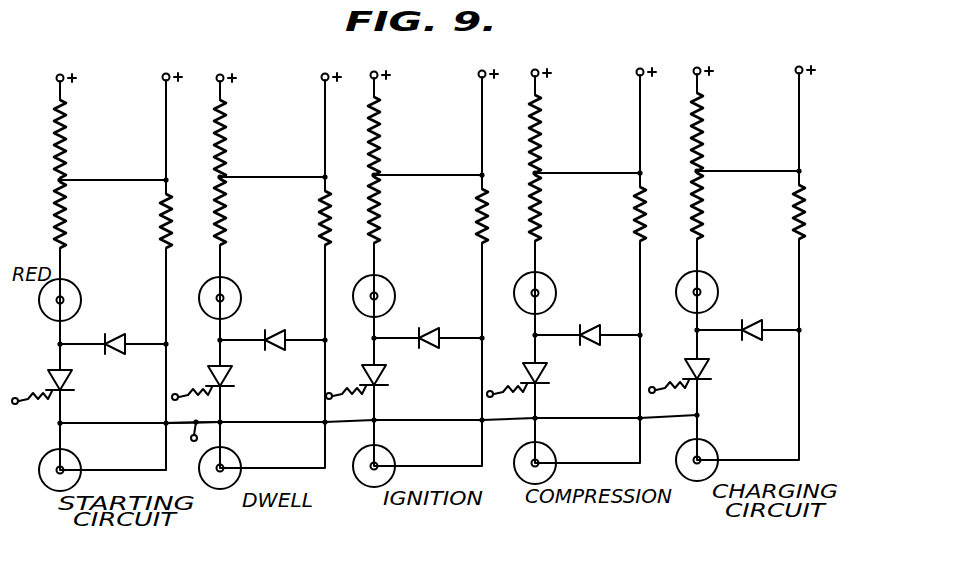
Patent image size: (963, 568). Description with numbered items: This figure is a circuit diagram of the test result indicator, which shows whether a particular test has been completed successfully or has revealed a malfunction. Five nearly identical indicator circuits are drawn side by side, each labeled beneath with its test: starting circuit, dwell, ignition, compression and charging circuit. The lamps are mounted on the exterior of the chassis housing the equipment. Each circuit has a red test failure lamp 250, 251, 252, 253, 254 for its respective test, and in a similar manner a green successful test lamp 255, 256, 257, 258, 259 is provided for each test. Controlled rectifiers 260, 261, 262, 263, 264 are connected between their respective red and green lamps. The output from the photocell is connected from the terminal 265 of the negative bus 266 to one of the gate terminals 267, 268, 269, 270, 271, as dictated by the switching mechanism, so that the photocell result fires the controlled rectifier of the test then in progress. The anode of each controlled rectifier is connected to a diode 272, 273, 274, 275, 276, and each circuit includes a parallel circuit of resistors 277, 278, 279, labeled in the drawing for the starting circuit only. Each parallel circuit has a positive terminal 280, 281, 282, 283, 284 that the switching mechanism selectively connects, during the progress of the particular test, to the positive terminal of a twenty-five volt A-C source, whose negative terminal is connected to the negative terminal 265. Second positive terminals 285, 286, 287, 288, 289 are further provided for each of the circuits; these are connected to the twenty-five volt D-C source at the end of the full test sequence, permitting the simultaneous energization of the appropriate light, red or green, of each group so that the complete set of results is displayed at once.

The red test failure lamp 250 is at (80, 294).
The red test failure lamp 251 is at (238, 282).
The red test failure lamp 252 is at (389, 278).
The red test failure lamp 253 is at (552, 278).
The red test failure lamp 254 is at (716, 276).
The green successful test lamp 255 is at (83, 465).
The green successful test lamp 256 is at (237, 462).
The green successful test lamp 257 is at (394, 457).
The green successful test lamp 258 is at (556, 457).
The green successful test lamp 259 is at (725, 455).
The controlled rectifier 260 is at (75, 380).
The controlled rectifier 261 is at (235, 382).
The controlled rectifier 262 is at (387, 380).
The controlled rectifier 263 is at (550, 377).
The controlled rectifier 264 is at (710, 372).
The negative terminal 265 is at (198, 438).
The negative bus 266 is at (210, 421).
The gate terminal 267 is at (18, 392).
The gate terminal 268 is at (185, 390).
The gate terminal 269 is at (345, 389).
The gate terminal 270 is at (500, 387).
The gate terminal 271 is at (668, 383).
The diode 272 is at (112, 338).
The diode 273 is at (283, 328).
The diode 274 is at (435, 327).
The diode 275 is at (602, 313).
The diode 276 is at (757, 321).
The resistor 277 is at (67, 153).
The resistor 278 is at (67, 242).
The resistor 279 is at (163, 229).
The positive terminal 280 is at (61, 73).
The positive terminal 281 is at (220, 73).
The positive terminal 282 is at (375, 70).
The positive terminal 283 is at (536, 68).
The positive terminal 284 is at (697, 66).
The second positive terminal 285 is at (170, 63).
The second positive terminal 286 is at (329, 62).
The second positive terminal 287 is at (483, 69).
The second positive terminal 288 is at (644, 57).
The second positive terminal 289 is at (805, 56).